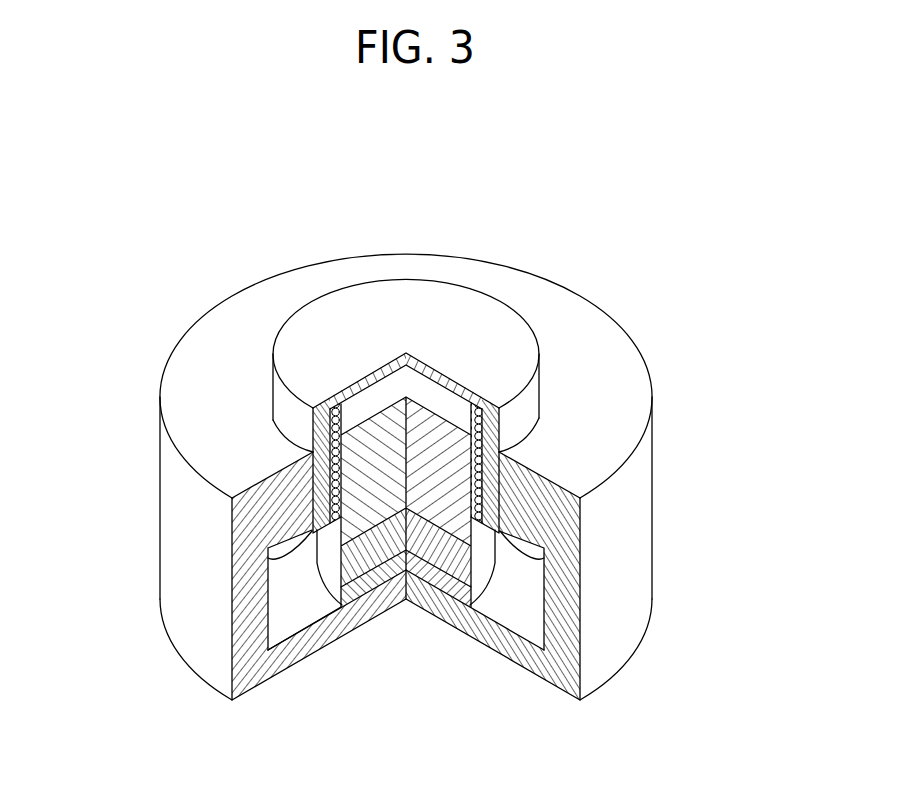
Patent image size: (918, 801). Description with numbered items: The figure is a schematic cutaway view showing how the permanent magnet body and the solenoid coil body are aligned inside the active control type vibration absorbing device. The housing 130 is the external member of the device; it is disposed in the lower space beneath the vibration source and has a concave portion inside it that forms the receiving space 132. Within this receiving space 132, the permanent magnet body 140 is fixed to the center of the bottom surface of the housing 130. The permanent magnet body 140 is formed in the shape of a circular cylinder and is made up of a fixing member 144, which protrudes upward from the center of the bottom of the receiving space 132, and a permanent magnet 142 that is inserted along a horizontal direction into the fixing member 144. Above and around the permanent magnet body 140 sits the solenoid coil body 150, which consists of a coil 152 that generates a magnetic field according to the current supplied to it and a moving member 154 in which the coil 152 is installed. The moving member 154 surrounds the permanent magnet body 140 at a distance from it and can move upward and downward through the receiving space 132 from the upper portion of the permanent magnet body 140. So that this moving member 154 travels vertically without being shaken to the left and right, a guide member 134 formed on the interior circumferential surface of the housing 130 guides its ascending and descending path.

The housing 130 is at (636, 530).
The receiving space 132 is at (303, 606).
The guide member 134 is at (268, 549).
The permanent magnet body 140 is at (521, 535).
The permanent magnet 142 is at (470, 562).
The fixing member 144 is at (490, 593).
The solenoid coil body 150 is at (524, 406).
The coil 152 is at (505, 410).
The moving member 154 is at (505, 428).